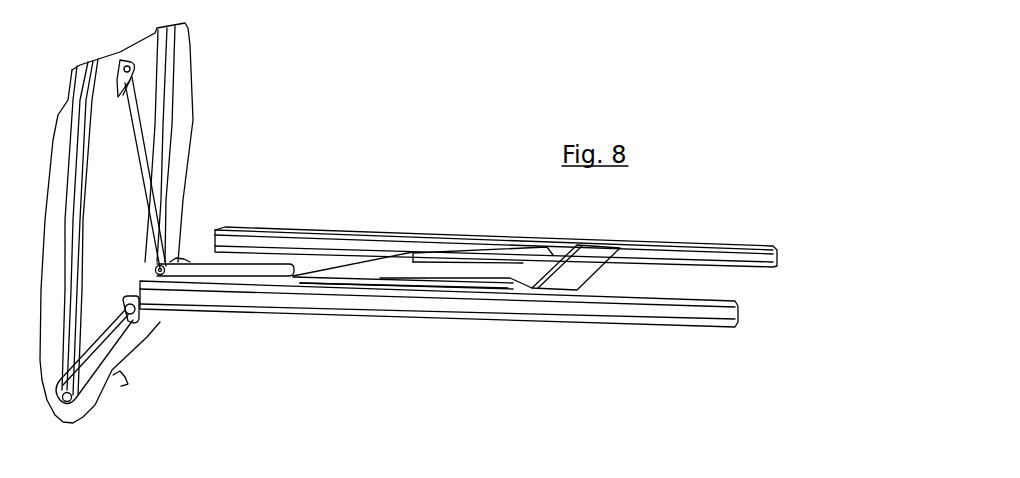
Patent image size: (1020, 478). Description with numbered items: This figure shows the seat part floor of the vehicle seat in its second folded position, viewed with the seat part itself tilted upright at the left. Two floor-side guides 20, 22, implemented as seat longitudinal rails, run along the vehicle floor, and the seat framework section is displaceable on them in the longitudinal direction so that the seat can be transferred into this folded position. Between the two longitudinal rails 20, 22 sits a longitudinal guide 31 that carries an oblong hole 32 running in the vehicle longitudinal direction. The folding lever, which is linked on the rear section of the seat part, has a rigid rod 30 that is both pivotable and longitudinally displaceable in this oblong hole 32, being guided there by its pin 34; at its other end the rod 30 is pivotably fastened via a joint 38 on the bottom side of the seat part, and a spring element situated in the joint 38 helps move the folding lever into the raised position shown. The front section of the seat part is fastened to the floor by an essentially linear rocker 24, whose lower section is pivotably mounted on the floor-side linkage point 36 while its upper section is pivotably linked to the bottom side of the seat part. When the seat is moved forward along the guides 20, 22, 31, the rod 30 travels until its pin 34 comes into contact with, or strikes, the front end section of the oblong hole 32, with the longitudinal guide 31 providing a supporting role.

The floor-side guide 20 is at (439, 350).
The floor-side guide 22 is at (499, 301).
The rocker 24 is at (103, 381).
The rigid rod 30 is at (194, 172).
The longitudinal guide 31 is at (400, 326).
The oblong hole 32 is at (229, 323).
The pin 34 is at (182, 322).
The floor-side linkage point 36 is at (154, 360).
The joint 38 is at (180, 78).